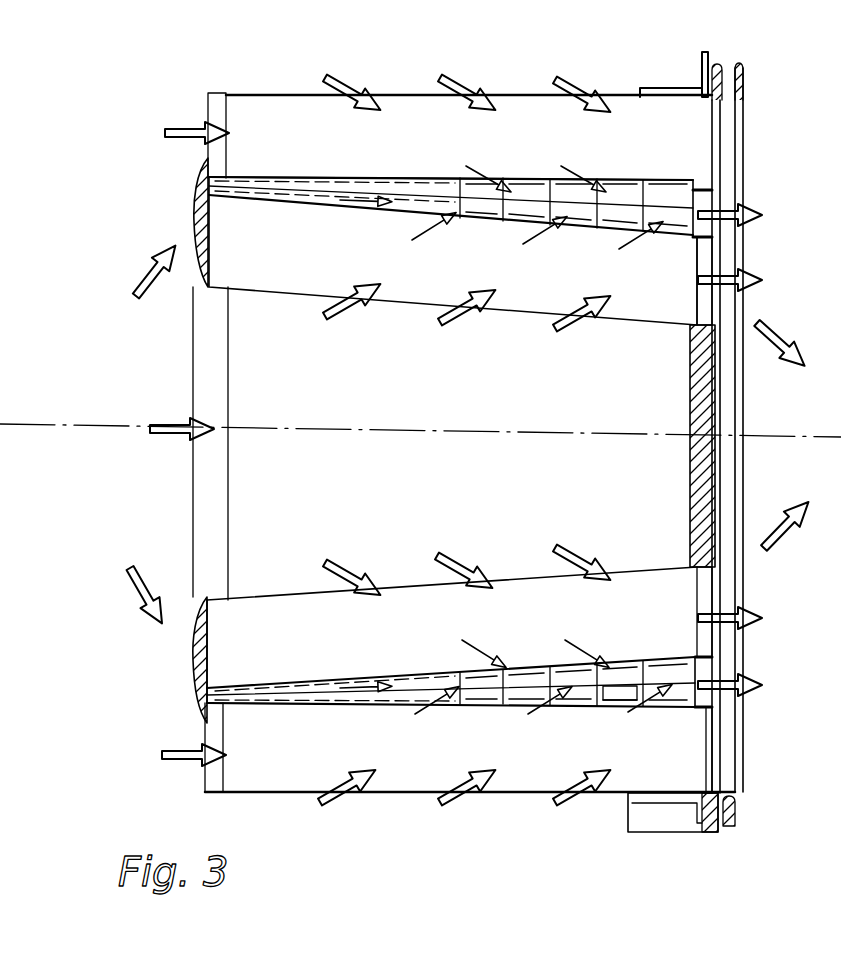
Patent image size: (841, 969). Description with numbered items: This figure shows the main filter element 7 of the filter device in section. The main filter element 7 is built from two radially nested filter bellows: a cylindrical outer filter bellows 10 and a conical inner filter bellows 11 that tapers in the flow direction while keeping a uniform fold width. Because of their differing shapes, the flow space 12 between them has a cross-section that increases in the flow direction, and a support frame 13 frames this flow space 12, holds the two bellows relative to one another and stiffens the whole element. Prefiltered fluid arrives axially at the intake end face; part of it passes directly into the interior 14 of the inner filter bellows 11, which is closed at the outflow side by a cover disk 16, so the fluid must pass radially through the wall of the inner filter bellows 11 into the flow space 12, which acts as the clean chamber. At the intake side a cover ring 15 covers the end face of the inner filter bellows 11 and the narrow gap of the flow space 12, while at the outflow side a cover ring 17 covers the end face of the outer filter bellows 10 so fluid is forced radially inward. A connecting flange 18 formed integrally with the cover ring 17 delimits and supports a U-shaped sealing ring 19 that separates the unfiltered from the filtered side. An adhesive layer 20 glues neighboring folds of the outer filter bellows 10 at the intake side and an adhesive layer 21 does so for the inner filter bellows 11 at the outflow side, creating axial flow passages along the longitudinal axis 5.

The longitudinal axis 5 is at (36, 420).
The main filter element 7 is at (227, 62).
The outer filter bellows 10 is at (517, 798).
The inner filter bellows 11 is at (407, 603).
The flow space 12 is at (657, 674).
The support frame 13 is at (595, 710).
The interior 14 is at (392, 480).
The cover ring 15 is at (198, 668).
The cover disk 16 is at (698, 465).
The cover ring 17 is at (712, 752).
The connecting flange 18 is at (697, 824).
The sealing ring 19 is at (737, 813).
The adhesive layer 20 is at (209, 103).
The adhesive layer 21 is at (703, 259).